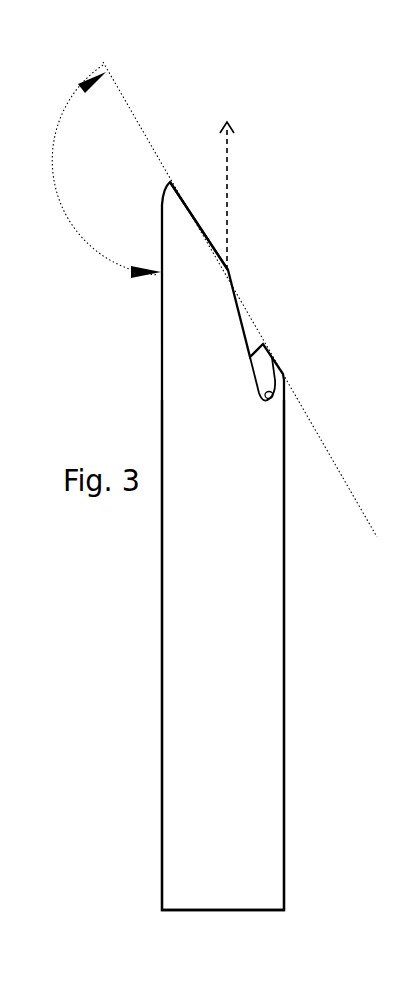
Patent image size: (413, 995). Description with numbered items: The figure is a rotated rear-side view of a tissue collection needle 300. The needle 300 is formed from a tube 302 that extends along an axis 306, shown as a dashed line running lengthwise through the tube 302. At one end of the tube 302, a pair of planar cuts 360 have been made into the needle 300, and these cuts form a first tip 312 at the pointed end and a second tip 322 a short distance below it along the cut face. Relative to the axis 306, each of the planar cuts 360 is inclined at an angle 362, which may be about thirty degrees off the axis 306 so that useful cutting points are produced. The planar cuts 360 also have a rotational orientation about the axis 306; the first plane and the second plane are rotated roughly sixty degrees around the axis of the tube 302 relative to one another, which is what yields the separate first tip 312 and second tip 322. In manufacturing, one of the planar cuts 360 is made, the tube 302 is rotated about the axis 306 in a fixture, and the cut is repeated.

The needle 300 is at (104, 680).
The tube 302 is at (162, 854).
The axis 306 is at (227, 207).
The first tip 312 is at (172, 182).
The second tip 322 is at (265, 333).
The planar cuts 360 is at (125, 107).
The angle 362 is at (85, 247).